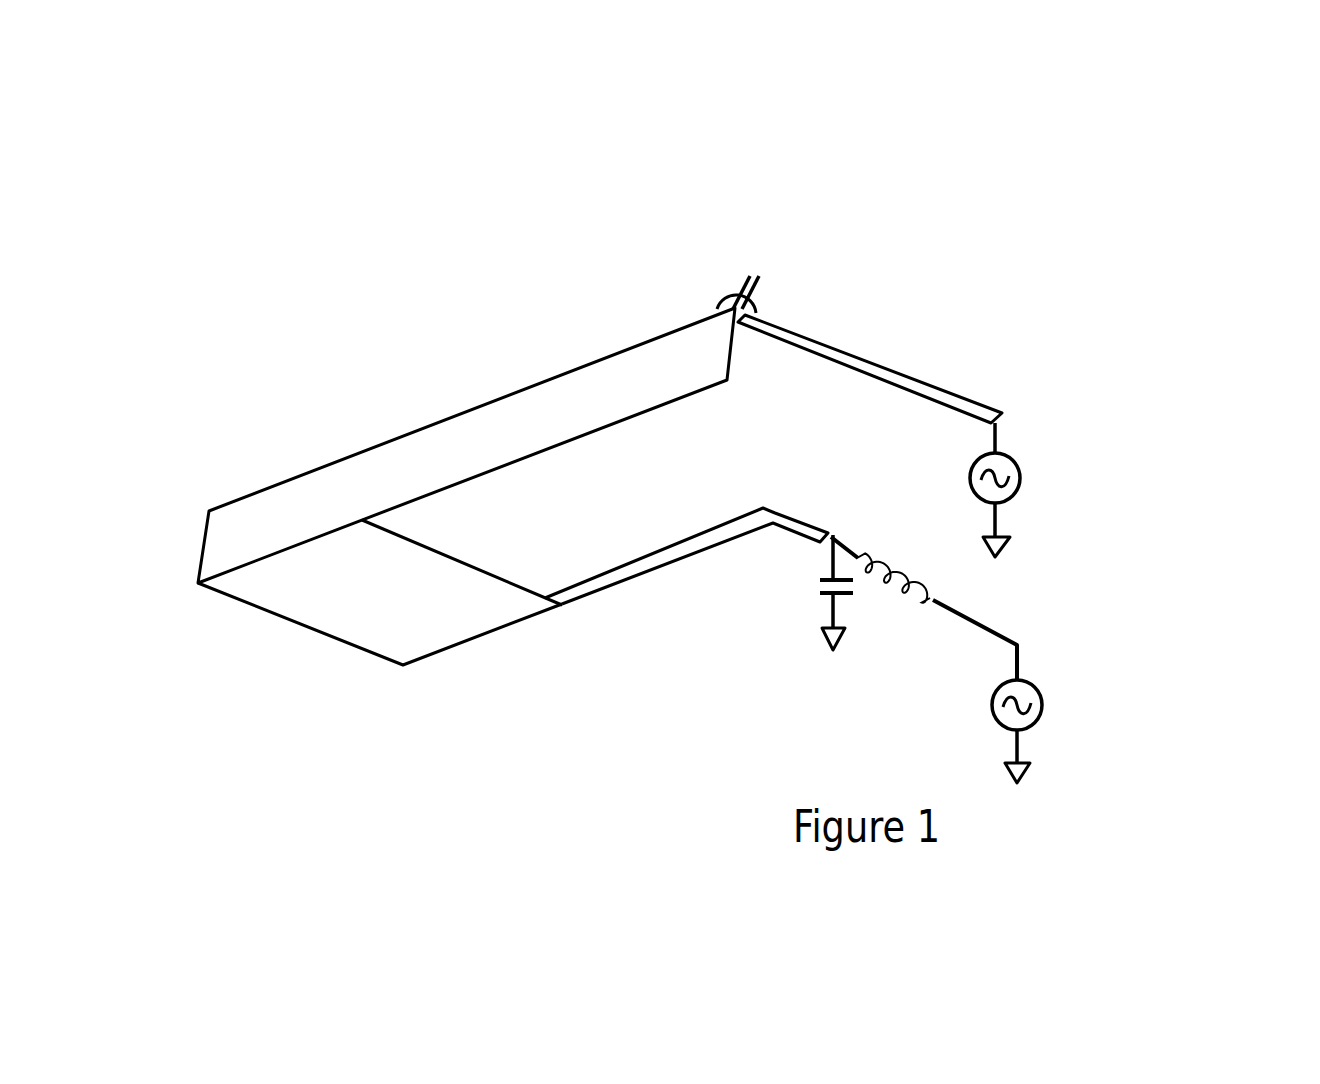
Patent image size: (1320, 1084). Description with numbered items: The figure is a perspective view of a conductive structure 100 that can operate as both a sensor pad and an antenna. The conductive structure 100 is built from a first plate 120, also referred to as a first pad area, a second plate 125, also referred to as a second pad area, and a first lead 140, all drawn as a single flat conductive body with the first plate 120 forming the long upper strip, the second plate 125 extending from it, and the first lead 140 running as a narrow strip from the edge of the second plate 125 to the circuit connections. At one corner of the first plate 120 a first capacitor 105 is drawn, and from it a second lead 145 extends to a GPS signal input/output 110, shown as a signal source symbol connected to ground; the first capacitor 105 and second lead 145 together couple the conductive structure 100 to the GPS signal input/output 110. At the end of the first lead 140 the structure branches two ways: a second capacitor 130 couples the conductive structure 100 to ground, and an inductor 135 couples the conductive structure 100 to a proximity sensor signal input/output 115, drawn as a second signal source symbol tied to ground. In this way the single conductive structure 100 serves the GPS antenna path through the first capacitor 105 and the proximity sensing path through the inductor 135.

The conductive structure 100 is at (1000, 233).
The first capacitor 105 is at (750, 268).
The GPS signal input/output 110 is at (1105, 490).
The proximity sensor signal input/output 115 is at (1115, 734).
The first plate 120 is at (463, 415).
The second plate 125 is at (323, 637).
The second capacitor 130 is at (807, 595).
The inductor 135 is at (933, 592).
The first lead 140 is at (617, 583).
The second lead 145 is at (920, 383).